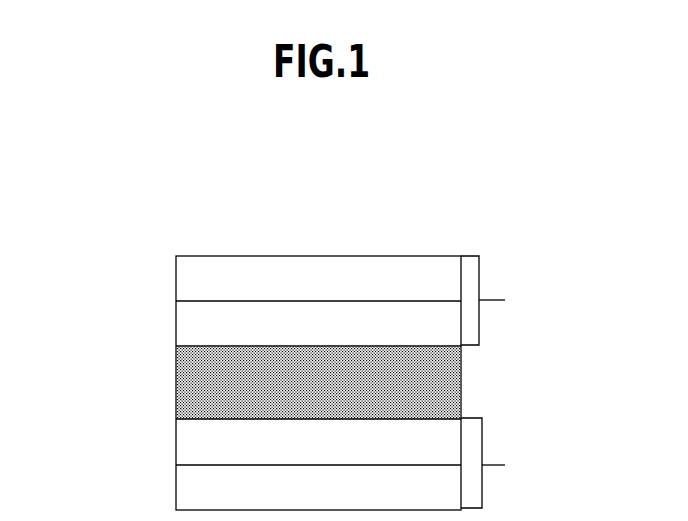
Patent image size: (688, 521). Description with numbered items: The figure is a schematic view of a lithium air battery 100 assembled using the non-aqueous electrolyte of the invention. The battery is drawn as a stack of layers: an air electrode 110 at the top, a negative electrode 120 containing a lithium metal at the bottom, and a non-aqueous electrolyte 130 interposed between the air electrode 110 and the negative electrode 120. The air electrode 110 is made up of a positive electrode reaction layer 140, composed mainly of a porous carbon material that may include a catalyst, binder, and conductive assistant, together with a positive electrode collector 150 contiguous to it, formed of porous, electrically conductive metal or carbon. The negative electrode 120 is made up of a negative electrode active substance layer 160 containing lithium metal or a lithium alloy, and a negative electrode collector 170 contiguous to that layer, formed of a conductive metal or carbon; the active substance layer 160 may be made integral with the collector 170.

The lithium air battery 100 is at (326, 208).
The air electrode 110 is at (511, 300).
The negative electrode 120 is at (511, 463).
The non-aqueous electrolyte 130 is at (461, 382).
The positive electrode reaction layer 140 is at (176, 325).
The positive electrode collector 150 is at (176, 278).
The negative electrode active substance layer 160 is at (176, 444).
The negative electrode collector 170 is at (176, 490).